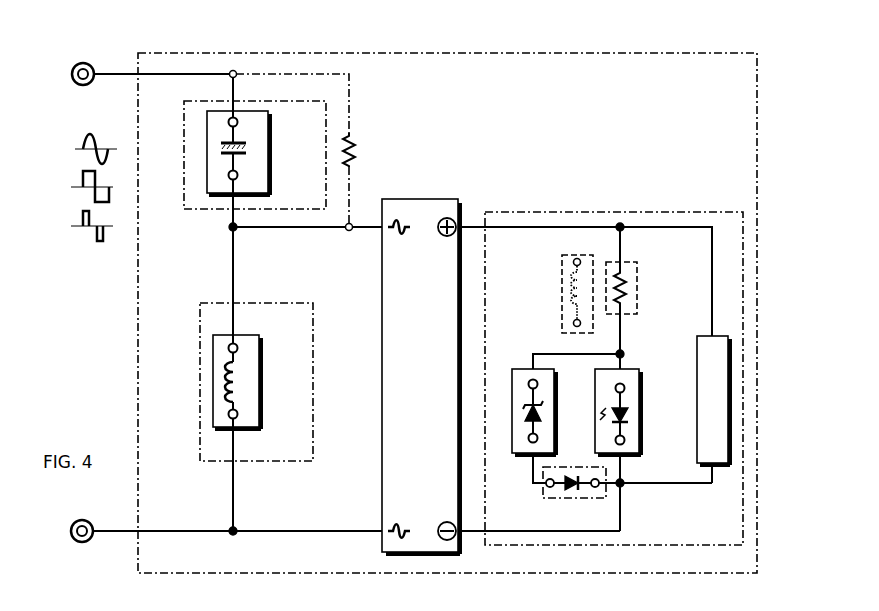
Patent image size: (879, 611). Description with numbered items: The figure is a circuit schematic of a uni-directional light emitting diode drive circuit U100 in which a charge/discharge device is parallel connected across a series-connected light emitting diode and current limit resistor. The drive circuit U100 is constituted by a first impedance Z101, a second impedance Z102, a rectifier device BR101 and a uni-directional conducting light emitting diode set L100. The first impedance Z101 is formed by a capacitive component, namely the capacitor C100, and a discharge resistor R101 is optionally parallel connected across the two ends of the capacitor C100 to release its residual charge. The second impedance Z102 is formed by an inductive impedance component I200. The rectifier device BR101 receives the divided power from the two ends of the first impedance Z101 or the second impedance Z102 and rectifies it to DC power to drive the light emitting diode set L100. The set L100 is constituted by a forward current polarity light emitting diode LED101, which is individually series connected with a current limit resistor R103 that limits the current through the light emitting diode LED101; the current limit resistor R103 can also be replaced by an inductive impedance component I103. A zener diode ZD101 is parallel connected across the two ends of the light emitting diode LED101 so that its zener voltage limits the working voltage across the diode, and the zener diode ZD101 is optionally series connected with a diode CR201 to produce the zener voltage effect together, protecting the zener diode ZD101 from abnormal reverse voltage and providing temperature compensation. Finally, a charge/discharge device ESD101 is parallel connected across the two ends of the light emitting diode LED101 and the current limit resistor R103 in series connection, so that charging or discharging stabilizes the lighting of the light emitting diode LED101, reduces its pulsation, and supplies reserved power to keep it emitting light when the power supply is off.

The uni-directional light emitting diode drive circuit U100 is at (138, 367).
The first impedance Z101 is at (185, 142).
The capacitor C100 is at (248, 146).
The discharge resistor R101 is at (328, 148).
The second impedance Z102 is at (200, 327).
The inductive impedance component I200 is at (242, 385).
The rectifier device BR101 is at (432, 199).
The uni-directional conducting light emitting diode set L100 is at (570, 212).
The inductive impedance component I103 is at (562, 280).
The current limit resistor R103 is at (637, 285).
The charge/discharge device ESD101 is at (695, 373).
The zener diode ZD101 is at (512, 408).
The light emitting diode LED101 is at (640, 435).
The diode CR201 is at (574, 494).